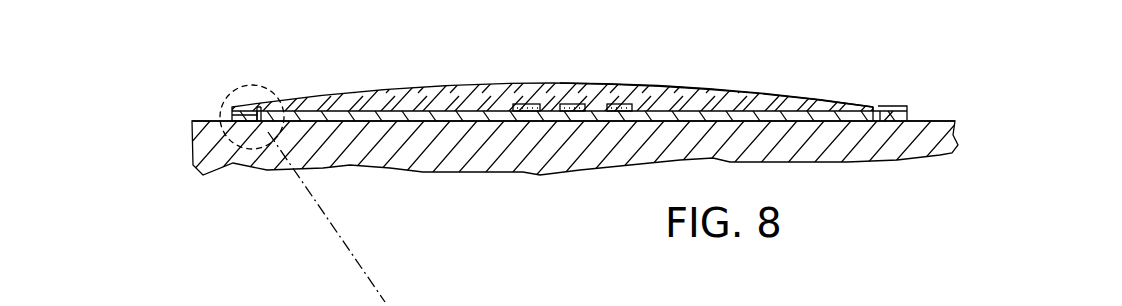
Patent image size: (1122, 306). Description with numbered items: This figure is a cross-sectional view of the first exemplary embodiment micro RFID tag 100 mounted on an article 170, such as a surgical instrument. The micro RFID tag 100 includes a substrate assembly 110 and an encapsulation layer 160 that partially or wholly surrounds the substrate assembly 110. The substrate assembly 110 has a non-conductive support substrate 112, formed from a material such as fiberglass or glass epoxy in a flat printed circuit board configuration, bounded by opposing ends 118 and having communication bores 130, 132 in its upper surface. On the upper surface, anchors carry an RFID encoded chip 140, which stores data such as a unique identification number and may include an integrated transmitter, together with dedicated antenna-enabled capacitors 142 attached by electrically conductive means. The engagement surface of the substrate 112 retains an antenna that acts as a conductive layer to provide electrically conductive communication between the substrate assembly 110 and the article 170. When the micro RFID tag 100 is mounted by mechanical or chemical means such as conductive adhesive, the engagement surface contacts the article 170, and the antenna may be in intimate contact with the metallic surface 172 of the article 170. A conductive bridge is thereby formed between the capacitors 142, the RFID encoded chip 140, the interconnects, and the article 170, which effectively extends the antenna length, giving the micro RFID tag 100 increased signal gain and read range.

The micro RFID tag 100 is at (559, 70).
The substrate assembly 110 is at (386, 97).
The support substrate 112 is at (851, 103).
The opposing ends 118 is at (229, 113).
The communication bore 130 is at (260, 111).
The communication bore 132 is at (874, 107).
The RFID encoded chip 140 is at (572, 105).
The antenna-enabled capacitor 142 is at (526, 104).
The encapsulation layer 160 is at (820, 89).
The article 170 is at (959, 141).
The metallic surface 172 is at (933, 121).